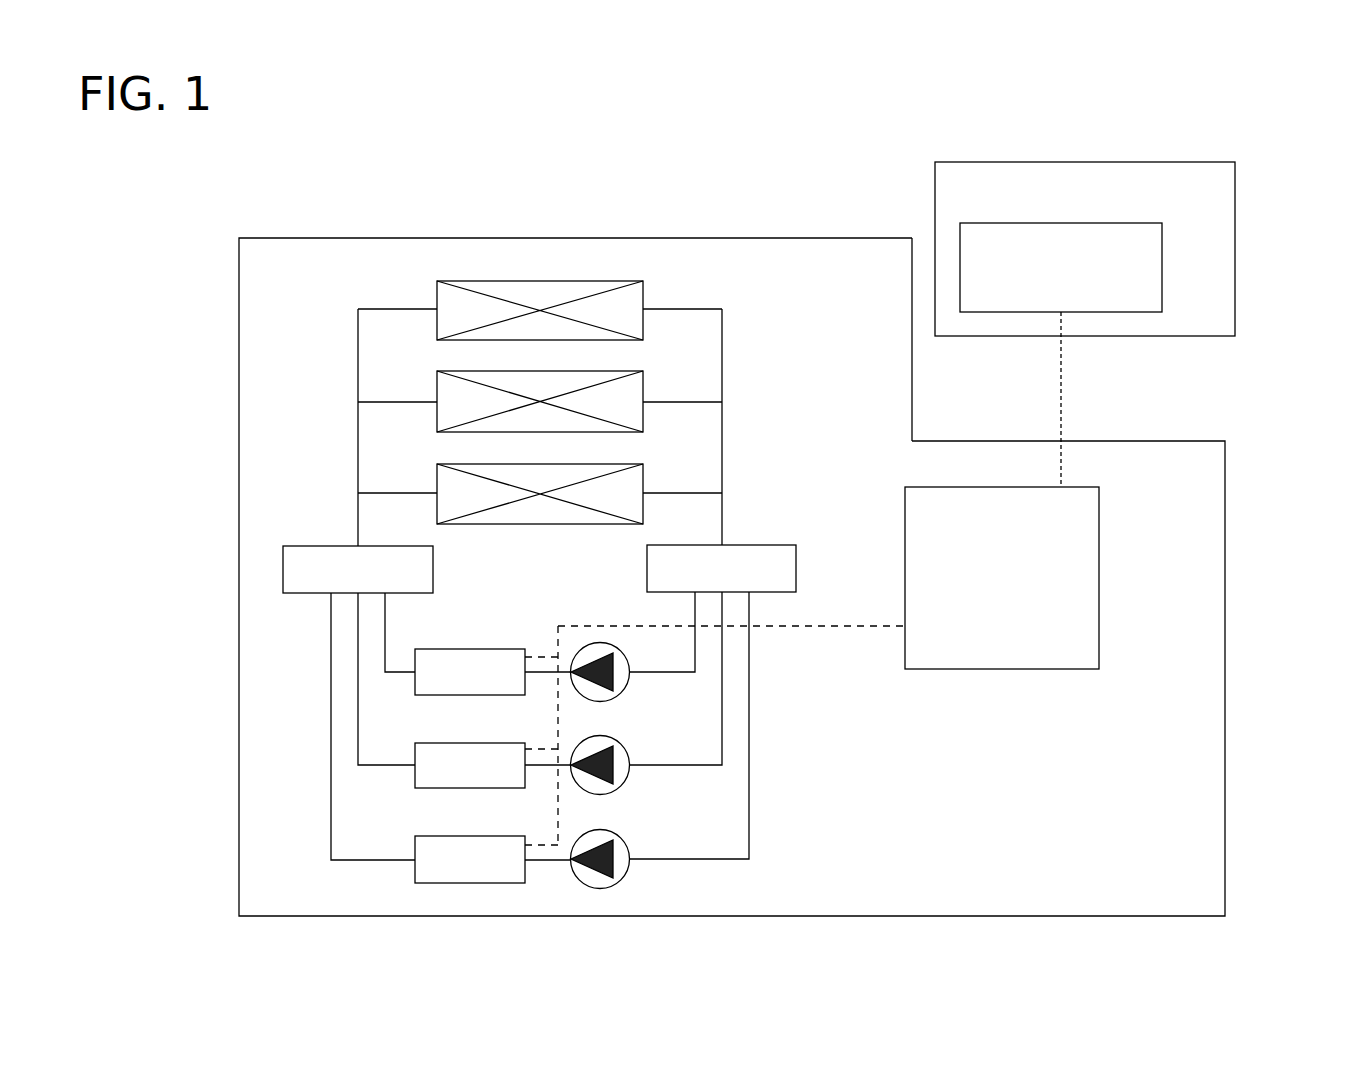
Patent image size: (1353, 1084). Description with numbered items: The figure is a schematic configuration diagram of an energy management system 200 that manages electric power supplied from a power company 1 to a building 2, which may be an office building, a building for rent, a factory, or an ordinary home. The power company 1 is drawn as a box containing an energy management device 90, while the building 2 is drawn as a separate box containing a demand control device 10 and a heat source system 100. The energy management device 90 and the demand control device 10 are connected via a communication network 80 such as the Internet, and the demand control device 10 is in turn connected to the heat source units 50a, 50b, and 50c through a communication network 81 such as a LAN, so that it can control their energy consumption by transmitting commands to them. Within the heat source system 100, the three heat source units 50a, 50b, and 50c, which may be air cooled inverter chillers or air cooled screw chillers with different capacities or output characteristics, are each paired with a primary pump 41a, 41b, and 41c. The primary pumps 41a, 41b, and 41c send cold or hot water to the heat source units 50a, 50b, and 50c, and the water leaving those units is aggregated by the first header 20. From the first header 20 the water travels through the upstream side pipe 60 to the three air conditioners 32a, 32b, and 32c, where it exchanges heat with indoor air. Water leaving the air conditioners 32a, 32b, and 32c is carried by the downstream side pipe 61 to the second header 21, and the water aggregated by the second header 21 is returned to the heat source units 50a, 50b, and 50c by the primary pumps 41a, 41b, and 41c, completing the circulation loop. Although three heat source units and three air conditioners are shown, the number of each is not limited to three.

The power company 1 is at (1235, 245).
The building 2 is at (1225, 510).
The demand control device 10 is at (1099, 580).
The first header 20 is at (433, 570).
The second header 21 is at (796, 568).
The air conditioner 32a is at (603, 464).
The air conditioner 32b is at (612, 371).
The air conditioner 32c is at (595, 281).
The primary pump 41a is at (622, 647).
The primary pump 41b is at (615, 738).
The primary pump 41c is at (612, 832).
The heat source unit 50a is at (500, 655).
The heat source unit 50b is at (495, 750).
The heat source unit 50c is at (485, 842).
The upstream side pipe 60 is at (358, 448).
The downstream side pipe 61 is at (722, 449).
The communication network 80 is at (1061, 395).
The communication network 81 is at (838, 626).
The energy management device 90 is at (1162, 268).
The heat source system 100 is at (756, 334).
The energy management system 200 is at (1122, 208).